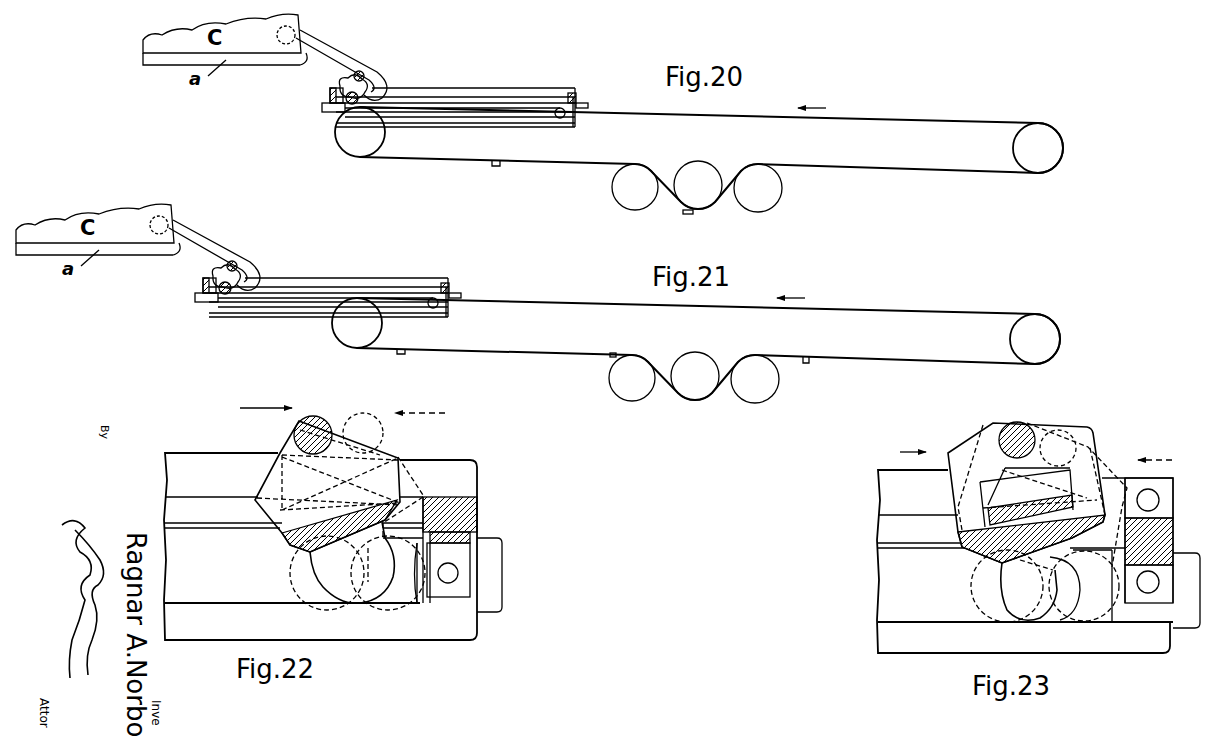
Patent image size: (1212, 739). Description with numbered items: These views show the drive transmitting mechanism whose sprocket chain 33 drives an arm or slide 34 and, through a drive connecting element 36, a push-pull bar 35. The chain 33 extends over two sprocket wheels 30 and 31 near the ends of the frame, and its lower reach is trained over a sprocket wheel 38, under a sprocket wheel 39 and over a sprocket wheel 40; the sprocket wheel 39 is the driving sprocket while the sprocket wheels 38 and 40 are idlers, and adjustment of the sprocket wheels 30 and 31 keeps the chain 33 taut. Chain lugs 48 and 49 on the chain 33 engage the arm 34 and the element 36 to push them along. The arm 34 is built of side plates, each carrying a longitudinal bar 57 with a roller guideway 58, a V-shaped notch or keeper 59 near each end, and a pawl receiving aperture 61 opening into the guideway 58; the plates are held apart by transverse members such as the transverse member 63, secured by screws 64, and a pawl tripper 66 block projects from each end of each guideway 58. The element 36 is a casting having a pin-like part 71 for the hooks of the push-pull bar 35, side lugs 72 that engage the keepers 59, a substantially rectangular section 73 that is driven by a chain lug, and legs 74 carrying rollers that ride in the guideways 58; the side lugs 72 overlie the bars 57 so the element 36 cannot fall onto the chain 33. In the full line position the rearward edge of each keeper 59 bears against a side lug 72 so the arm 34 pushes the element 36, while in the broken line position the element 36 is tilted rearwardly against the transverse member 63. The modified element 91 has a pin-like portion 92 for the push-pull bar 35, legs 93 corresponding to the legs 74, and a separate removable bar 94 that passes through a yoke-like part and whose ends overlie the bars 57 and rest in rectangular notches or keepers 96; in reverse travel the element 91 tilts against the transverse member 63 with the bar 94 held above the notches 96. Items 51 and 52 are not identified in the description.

In FIG. 20, the sprocket wheel 30 is at (340, 137).
In FIG. 21, the sprocket wheel 30 is at (373, 323).
In FIG. 20, the sprocket wheel 31 is at (1054, 146).
In FIG. 21, the sprocket wheel 31 is at (1046, 335).
In FIG. 20, the sprocket chain 33 is at (864, 121).
In FIG. 21, the sprocket chain 33 is at (708, 343).
In FIG. 20, the arm or slide 34 is at (508, 128).
In FIG. 21, the arm or slide 34 is at (321, 308).
In FIG. 22, the arm or slide 34 is at (220, 450).
In FIG. 23, the arm or slide 34 is at (874, 637).
In FIG. 20, the push-pull bar 35 is at (343, 58).
In FIG. 21, the push-pull bar 35 is at (214, 253).
In FIG. 20, the drive connecting element 36 is at (344, 83).
In FIG. 21, the drive connecting element 36 is at (206, 275).
In FIG. 22, the drive connecting element 36 is at (269, 481).
In FIG. 20, the sprocket wheel 38 is at (618, 184).
In FIG. 21, the sprocket wheel 38 is at (632, 365).
In FIG. 20, the sprocket wheel 39 is at (697, 170).
In FIG. 21, the sprocket wheel 39 is at (695, 364).
In FIG. 20, the sprocket wheel 40 is at (777, 186).
In FIG. 21, the sprocket wheel 40 is at (755, 366).
In FIG. 20, the chain lug 48 is at (694, 214).
In FIG. 21, the chain lug 48 is at (823, 371).
In FIG. 20, the chain lug 49 is at (496, 166).
In FIG. 21, the chain lug 49 is at (591, 368).
In FIG. 20, the pin 51 is at (354, 106).
In FIG. 21, the pin 51 is at (418, 359).
In FIG. 20, the end block 52 is at (579, 107).
In FIG. 21, the end block 52 is at (465, 289).
In FIG. 22, the bar 57 is at (188, 518).
In FIG. 23, the bar 57 is at (886, 524).
In FIG. 22, the roller guideway 58 is at (211, 593).
In FIG. 23, the roller guideway 58 is at (918, 622).
In FIG. 22, the keeper 59 is at (256, 504).
In FIG. 22, the pawl receiving aperture 61 is at (408, 603).
In FIG. 23, the pawl receiving aperture 61 is at (1102, 618).
In FIG. 22, the transverse member 63 is at (478, 506).
In FIG. 23, the transverse member 63 is at (1160, 531).
In FIG. 22, the screw 64 is at (478, 524).
In FIG. 23, the screw 64 is at (1151, 499).
In FIG. 22, the pawl tripper 66 is at (495, 561).
In FIG. 23, the pawl tripper 66 is at (1184, 628).
In FIG. 22, the pin-like part 71 is at (296, 428).
In FIG. 22, the side lug 72 is at (392, 451).
In FIG. 22, the substantially rectangular section 73 is at (300, 551).
In FIG. 22, the leg 74 is at (326, 587).
In FIG. 23, the element 91 is at (963, 444).
In FIG. 23, the pin-like portion 92 is at (1020, 430).
In FIG. 23, the leg 93 is at (1003, 597).
In FIG. 23, the bar 94 is at (1085, 500).
In FIG. 23, the notch or keeper 96 is at (1018, 563).